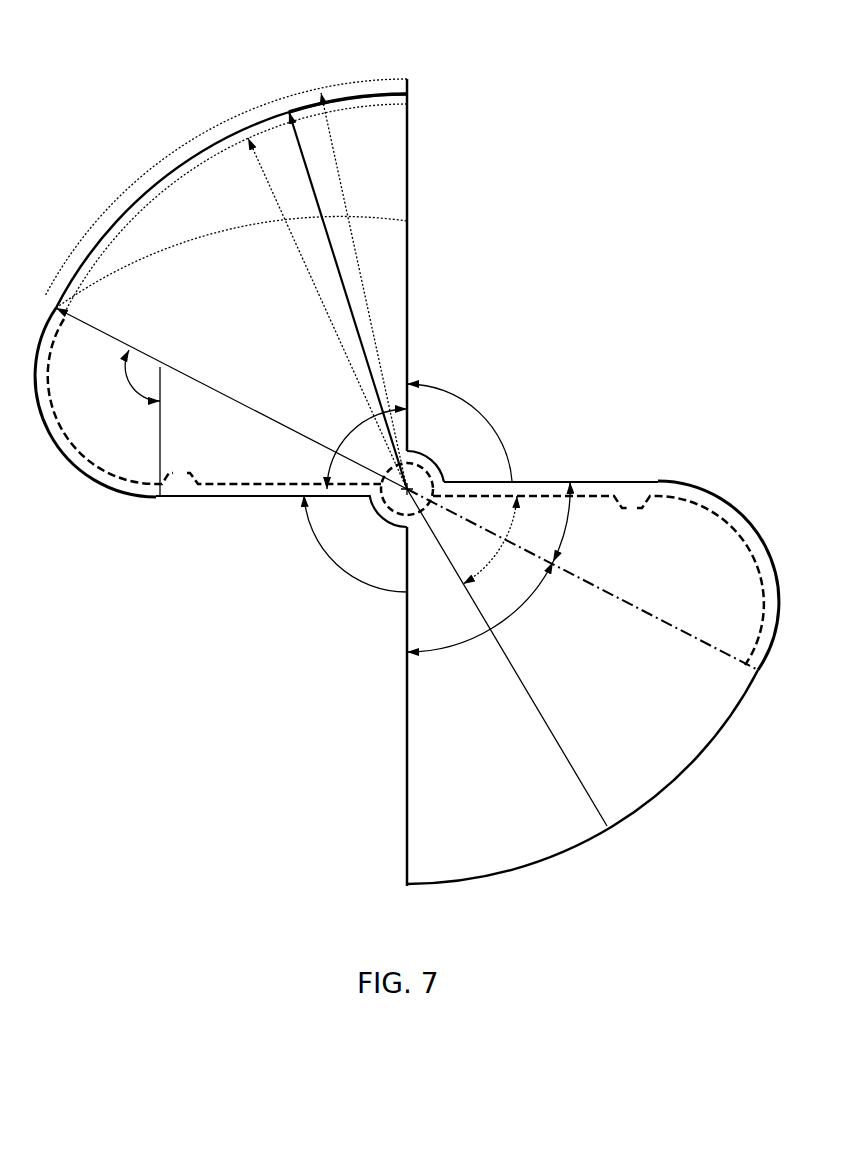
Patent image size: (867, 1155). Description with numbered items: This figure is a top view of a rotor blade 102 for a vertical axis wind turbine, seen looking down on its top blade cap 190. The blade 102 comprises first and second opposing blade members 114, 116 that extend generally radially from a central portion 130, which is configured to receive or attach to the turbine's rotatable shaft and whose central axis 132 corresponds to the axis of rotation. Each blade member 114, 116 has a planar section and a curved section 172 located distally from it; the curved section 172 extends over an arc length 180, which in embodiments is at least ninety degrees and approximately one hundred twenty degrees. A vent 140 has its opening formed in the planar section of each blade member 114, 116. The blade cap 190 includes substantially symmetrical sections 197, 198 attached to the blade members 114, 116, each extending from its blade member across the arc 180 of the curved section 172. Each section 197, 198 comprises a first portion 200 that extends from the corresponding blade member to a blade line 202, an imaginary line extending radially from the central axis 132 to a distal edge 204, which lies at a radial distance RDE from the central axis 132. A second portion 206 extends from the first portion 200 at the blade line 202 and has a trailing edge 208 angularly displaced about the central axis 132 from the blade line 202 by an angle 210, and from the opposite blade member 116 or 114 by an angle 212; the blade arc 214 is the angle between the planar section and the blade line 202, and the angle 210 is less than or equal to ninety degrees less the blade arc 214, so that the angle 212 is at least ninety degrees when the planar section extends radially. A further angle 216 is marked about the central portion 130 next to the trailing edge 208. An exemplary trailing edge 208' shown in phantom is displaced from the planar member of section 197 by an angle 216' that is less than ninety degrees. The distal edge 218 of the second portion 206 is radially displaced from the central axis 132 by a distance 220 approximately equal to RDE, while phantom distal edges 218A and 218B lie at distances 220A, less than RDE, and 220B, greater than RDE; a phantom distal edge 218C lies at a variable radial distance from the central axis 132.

The rotor blade 102 is at (615, 115).
The first blade member 114 is at (537, 472).
The second blade member 116 is at (260, 497).
The central portion 130 is at (390, 528).
The central axis 132 is at (413, 448).
The vent 140 is at (182, 507).
The curved section 172 is at (85, 477).
The arc length 180 is at (130, 383).
The top blade cap 190 is at (150, 217).
The section of blade cap 197 is at (713, 727).
The section of blade cap 198 is at (205, 185).
The first portion 200 is at (80, 430).
The blade line 202 is at (697, 640).
The distal edge 204 is at (52, 306).
The second portion 206 is at (232, 157).
The trailing edge 208 is at (413, 482).
The exemplary trailing edge 208' is at (507, 657).
The angle 210 is at (517, 612).
The angle 212 is at (477, 402).
The blade arc 214 is at (571, 524).
The angle 216 is at (346, 434).
The angle 216' is at (493, 547).
The distal edge 218 is at (377, 93).
The distal edge 218A is at (386, 108).
The distal edge 218B is at (346, 87).
The distal edge 218C is at (127, 272).
The distance 220 is at (340, 268).
The distance 220A is at (316, 287).
The distance 220B is at (342, 182).
The radial distance RDE is at (203, 385).